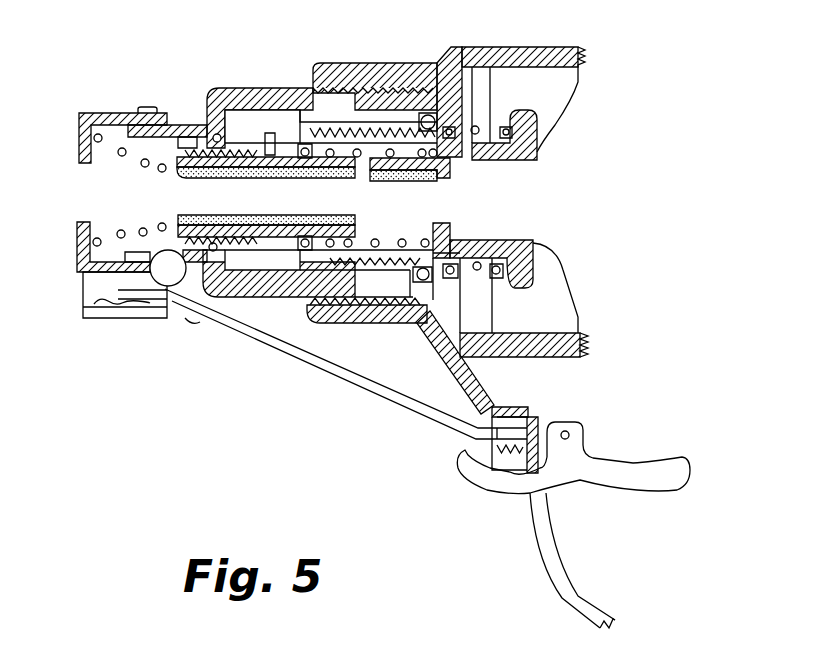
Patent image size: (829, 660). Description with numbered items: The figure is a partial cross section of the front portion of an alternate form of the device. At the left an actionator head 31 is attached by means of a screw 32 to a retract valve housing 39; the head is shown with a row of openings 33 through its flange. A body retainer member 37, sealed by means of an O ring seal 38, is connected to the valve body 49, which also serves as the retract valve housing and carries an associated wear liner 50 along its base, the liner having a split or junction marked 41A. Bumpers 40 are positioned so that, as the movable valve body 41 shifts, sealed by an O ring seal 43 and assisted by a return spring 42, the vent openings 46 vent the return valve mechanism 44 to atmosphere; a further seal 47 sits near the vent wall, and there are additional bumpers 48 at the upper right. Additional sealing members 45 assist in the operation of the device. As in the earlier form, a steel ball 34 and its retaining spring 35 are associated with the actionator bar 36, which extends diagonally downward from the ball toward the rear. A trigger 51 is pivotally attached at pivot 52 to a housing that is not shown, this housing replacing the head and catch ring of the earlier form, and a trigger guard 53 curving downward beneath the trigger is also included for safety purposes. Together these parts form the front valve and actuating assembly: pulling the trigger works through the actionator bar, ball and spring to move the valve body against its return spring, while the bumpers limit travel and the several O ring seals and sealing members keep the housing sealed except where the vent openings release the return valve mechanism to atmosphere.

The actionator head 31 is at (79, 136).
The screw 32 is at (152, 107).
The mounting holes 33 is at (119, 156).
The steel ball 34 is at (170, 293).
The retaining spring 35 is at (150, 306).
The actionator bar 36 is at (298, 365).
The body retainer member 37 is at (190, 143).
The O ring seal 38 is at (217, 134).
The retract valve housing 39 is at (243, 88).
The bumpers 40 is at (271, 133).
The valve body 41 is at (342, 130).
The base plate 41A is at (362, 180).
The return spring 42 is at (389, 149).
The O ring seal 43 is at (303, 251).
The return valve mechanism 44 is at (418, 282).
The additional sealing members 45 is at (448, 279).
The vent openings 46 is at (450, 57).
The seal ring 47 is at (475, 126).
The bumpers 48 is at (582, 70).
The valve body 49 is at (463, 158).
The wear liner 50 is at (432, 181).
The trigger 51 is at (635, 462).
The pivot 52 is at (570, 428).
The trigger guard 53 is at (565, 545).